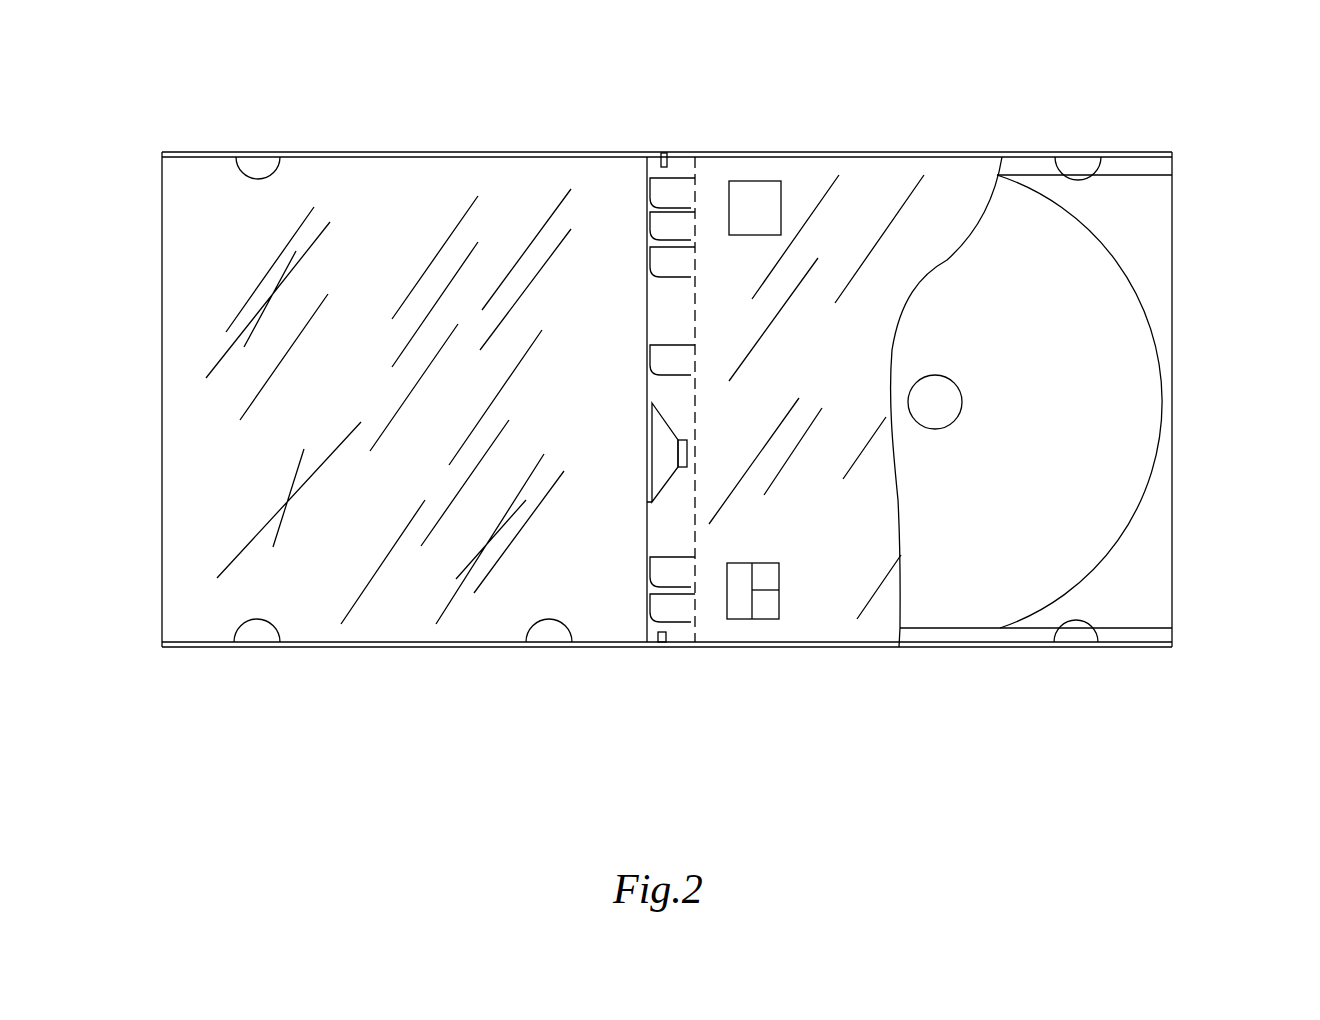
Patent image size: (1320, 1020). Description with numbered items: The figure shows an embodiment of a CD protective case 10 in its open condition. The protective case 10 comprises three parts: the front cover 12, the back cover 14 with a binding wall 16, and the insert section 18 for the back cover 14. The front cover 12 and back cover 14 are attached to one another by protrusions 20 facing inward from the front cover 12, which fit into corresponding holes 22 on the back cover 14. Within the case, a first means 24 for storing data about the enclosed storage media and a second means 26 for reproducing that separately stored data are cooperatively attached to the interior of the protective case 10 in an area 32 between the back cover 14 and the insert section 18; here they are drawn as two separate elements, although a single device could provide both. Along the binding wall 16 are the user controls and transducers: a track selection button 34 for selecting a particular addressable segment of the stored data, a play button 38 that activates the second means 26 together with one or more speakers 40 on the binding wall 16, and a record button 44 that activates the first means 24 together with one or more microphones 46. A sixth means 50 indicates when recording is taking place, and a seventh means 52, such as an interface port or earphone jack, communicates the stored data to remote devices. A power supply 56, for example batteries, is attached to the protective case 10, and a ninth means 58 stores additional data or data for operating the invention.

The protective case 10 is at (1208, 238).
The front cover 12 is at (350, 202).
The back cover 14 is at (843, 157).
The binding wall 16 is at (647, 167).
The insert section 18 is at (1066, 252).
The protrusions 20 is at (664, 153).
The holes 22 is at (658, 642).
The first means for storing data 24 is at (735, 602).
The second means for reproducing the separately stored data 26 is at (764, 605).
The area 32 is at (948, 202).
The track selection button 34 is at (665, 230).
The play button 38 is at (673, 192).
The speakers 40 is at (660, 453).
The record button 44 is at (673, 568).
The microphones 46 is at (672, 357).
The sixth means for indicating the operation of the fourth means 50 is at (672, 265).
The seventh means for communicating the separately stored data 52 is at (667, 603).
The power supply 56 is at (757, 210).
The ninth means for storing additional data 58 is at (769, 576).